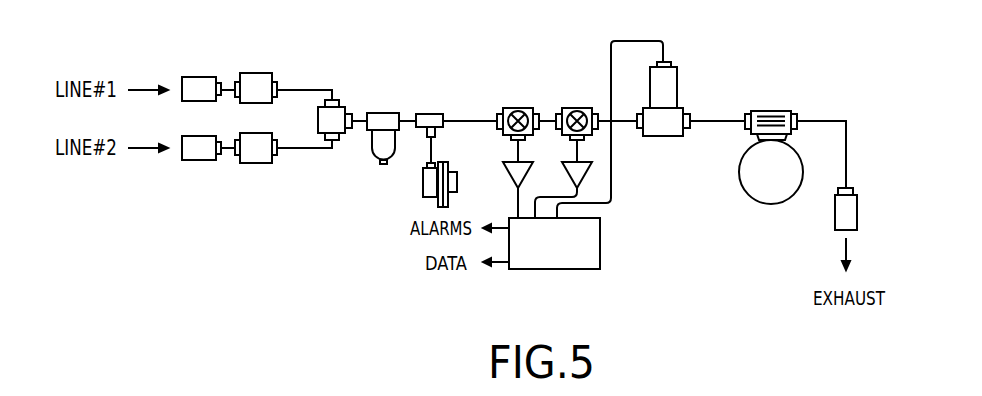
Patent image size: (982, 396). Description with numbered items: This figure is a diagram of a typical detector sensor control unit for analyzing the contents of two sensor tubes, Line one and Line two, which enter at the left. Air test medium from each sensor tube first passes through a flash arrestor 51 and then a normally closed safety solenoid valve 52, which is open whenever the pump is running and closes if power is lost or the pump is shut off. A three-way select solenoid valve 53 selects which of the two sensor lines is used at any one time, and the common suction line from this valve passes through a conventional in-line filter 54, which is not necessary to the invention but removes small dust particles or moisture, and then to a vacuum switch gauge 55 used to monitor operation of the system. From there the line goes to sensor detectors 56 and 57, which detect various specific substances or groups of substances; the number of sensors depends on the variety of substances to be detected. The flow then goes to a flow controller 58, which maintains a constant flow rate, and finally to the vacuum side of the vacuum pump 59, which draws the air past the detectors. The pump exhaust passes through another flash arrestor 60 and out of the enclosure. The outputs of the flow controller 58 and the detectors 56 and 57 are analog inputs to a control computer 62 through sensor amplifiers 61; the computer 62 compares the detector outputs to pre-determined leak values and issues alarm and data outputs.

The flash arrestor 51 is at (195, 77).
The safety solenoid valve 52 is at (258, 73).
The three-way select solenoid valve 53 is at (350, 107).
The line filter 54 is at (385, 113).
The vacuum switch gauge 55 is at (423, 184).
The sensor gas detector 56 is at (518, 107).
The sensor gas detector 57 is at (585, 108).
The flow controller 58 is at (677, 87).
The vacuum pump 59 is at (781, 111).
The flash arrestor 60 is at (835, 212).
The sensor amplifier 61 is at (513, 177).
The computer 62 is at (590, 270).